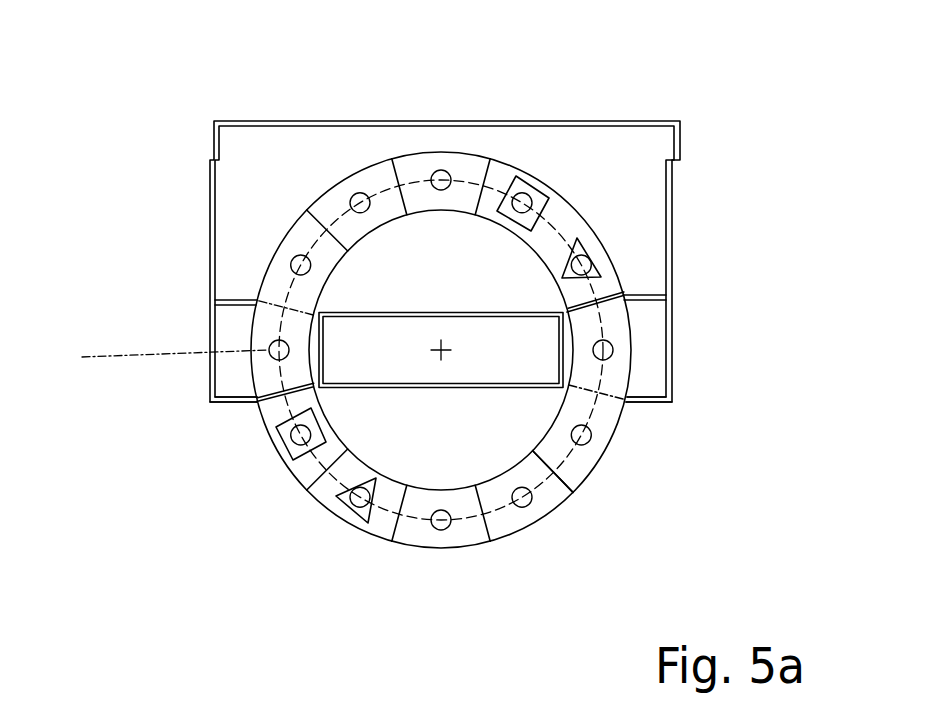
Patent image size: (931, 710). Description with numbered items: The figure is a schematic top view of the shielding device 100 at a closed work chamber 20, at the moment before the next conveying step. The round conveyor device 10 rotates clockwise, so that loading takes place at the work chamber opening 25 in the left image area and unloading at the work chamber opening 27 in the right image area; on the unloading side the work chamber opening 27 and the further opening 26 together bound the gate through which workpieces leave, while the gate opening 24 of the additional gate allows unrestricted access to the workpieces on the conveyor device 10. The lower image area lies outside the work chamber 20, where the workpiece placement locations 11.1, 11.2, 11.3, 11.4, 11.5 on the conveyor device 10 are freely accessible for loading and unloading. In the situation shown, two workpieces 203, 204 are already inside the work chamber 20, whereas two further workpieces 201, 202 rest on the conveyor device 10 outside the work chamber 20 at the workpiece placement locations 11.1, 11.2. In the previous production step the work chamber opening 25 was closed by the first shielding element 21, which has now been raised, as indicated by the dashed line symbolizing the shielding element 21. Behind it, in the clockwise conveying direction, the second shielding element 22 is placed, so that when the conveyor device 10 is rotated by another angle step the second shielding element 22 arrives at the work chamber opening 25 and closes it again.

The shielding device 100 is at (720, 86).
The conveyor device 10 is at (418, 150).
The work chamber 20 is at (286, 120).
The first shielding element 21 is at (616, 315).
The second shielding element 22 is at (605, 394).
The gate opening 24 is at (252, 410).
The work chamber opening 25 is at (252, 294).
The opening 26 is at (622, 402).
The work chamber opening 27 is at (626, 290).
The workpiece placement location 11.1 is at (310, 478).
The workpiece placement location 11.2 is at (319, 492).
The workpiece placement location 11.3 is at (461, 540).
The workpiece placement location 11.4 is at (528, 513).
The workpiece placement location 11.5 is at (578, 462).
The workpiece 201 is at (290, 448).
The workpiece 202 is at (368, 515).
The workpiece 203 is at (533, 168).
The workpiece 204 is at (590, 242).